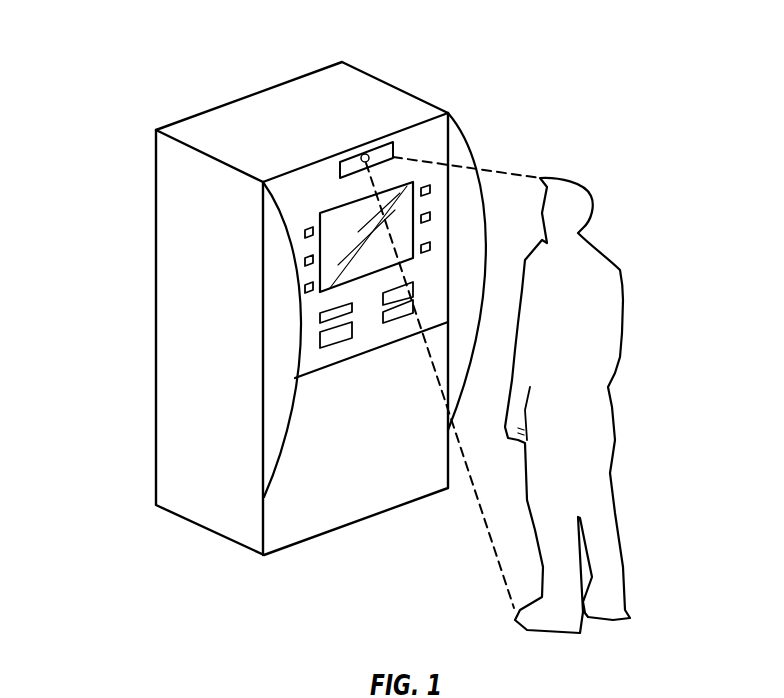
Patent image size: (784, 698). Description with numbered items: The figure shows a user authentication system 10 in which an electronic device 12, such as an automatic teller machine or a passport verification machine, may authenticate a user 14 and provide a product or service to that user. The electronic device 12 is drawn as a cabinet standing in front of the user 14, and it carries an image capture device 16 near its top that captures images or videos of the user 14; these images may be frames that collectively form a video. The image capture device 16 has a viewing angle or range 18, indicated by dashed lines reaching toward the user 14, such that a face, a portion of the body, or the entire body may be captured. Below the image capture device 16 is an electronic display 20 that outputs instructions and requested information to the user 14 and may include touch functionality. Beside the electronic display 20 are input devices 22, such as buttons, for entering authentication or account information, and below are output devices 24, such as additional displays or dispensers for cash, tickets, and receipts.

The user authentication system 10 is at (598, 53).
The electronic device 12 is at (252, 94).
The user 14 is at (592, 207).
The image capture device 16 is at (363, 150).
The viewing angle or range 18 is at (497, 172).
The electronic display 20 is at (340, 206).
The input devices 22 is at (303, 237).
The output devices 24 is at (320, 345).